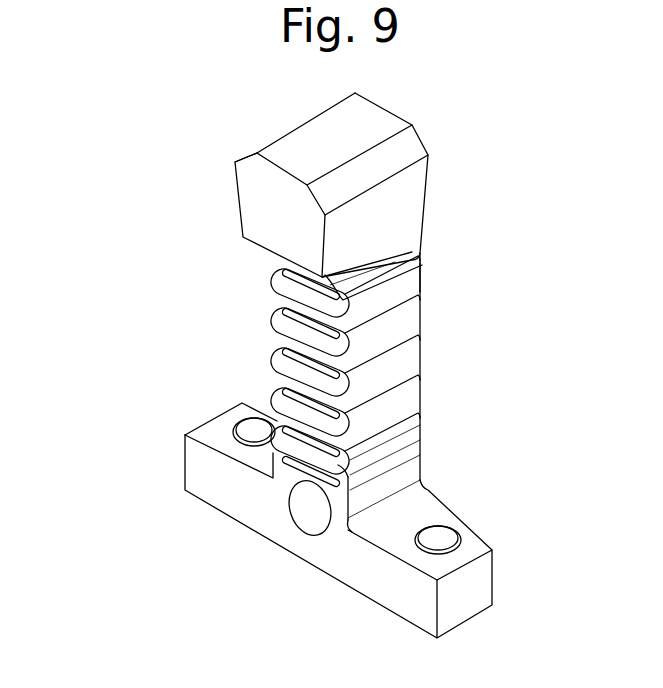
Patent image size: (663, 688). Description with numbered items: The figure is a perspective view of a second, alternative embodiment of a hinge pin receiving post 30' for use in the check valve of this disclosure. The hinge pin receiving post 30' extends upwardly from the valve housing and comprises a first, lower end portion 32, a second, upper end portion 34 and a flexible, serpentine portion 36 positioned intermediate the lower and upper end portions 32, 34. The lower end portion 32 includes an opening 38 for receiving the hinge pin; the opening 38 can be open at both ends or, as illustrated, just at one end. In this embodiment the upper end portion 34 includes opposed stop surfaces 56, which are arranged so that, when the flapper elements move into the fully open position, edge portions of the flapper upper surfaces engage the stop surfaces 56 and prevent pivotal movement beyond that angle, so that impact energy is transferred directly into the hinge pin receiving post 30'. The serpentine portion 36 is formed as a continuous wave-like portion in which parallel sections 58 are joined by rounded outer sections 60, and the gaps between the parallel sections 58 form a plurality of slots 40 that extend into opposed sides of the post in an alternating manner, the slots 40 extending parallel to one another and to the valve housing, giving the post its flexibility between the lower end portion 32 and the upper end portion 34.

The hinge pin receiving post 30' is at (95, 143).
The first, lower end portion 32 is at (185, 466).
The second, upper end portion 34 is at (410, 199).
The flexible, serpentine portion 36 is at (410, 317).
The opening 38 is at (303, 530).
The slots 40 is at (340, 383).
The stop surfaces 56 is at (336, 240).
The parallel sections 58 is at (282, 342).
The rounded outer sections 60 is at (420, 408).